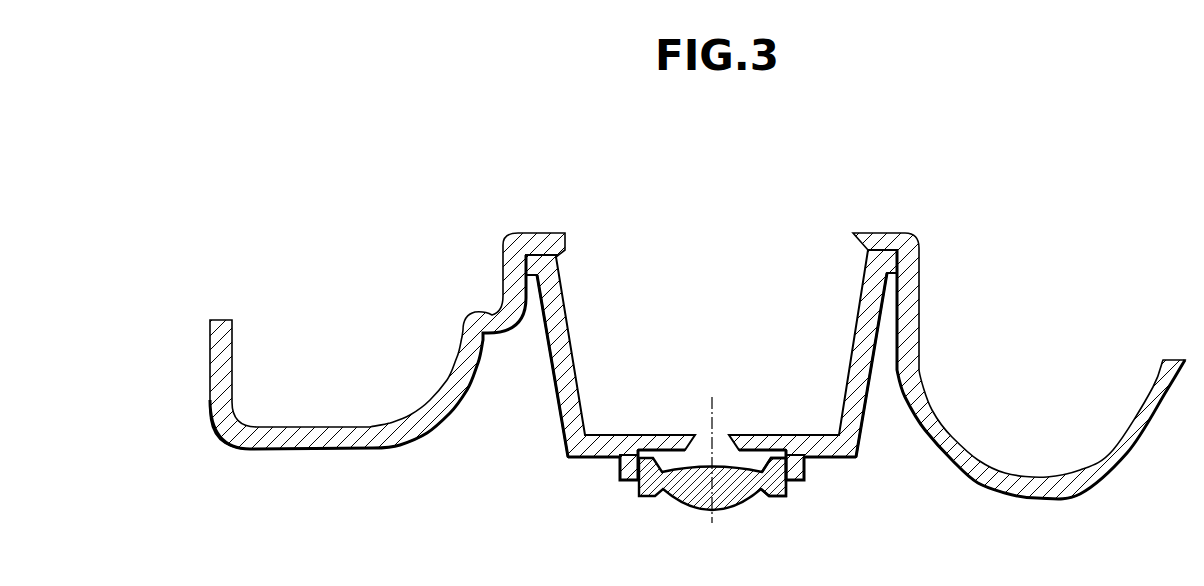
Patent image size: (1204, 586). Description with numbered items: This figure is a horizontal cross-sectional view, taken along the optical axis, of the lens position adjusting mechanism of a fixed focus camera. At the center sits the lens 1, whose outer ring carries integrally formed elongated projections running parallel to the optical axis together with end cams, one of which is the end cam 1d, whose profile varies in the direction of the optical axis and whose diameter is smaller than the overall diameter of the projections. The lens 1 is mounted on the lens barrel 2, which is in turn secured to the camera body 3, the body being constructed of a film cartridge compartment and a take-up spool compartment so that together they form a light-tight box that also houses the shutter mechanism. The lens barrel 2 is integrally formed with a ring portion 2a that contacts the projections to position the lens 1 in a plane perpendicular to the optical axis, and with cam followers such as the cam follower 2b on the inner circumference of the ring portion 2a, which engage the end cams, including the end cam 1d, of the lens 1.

The lens 1 is at (730, 497).
The end cam 1d is at (780, 500).
The lens barrel 2 is at (560, 396).
The ring portion 2a is at (620, 472).
The cam follower 2b is at (806, 468).
The camera body 3 is at (328, 440).